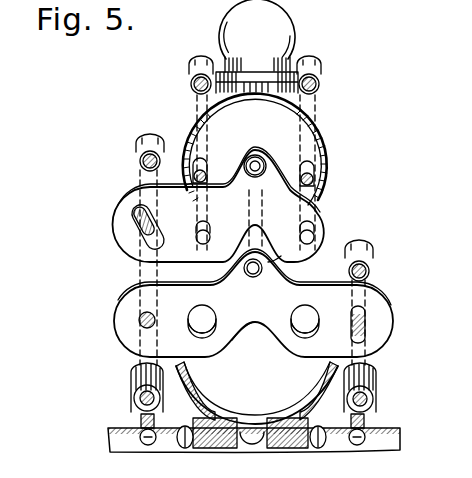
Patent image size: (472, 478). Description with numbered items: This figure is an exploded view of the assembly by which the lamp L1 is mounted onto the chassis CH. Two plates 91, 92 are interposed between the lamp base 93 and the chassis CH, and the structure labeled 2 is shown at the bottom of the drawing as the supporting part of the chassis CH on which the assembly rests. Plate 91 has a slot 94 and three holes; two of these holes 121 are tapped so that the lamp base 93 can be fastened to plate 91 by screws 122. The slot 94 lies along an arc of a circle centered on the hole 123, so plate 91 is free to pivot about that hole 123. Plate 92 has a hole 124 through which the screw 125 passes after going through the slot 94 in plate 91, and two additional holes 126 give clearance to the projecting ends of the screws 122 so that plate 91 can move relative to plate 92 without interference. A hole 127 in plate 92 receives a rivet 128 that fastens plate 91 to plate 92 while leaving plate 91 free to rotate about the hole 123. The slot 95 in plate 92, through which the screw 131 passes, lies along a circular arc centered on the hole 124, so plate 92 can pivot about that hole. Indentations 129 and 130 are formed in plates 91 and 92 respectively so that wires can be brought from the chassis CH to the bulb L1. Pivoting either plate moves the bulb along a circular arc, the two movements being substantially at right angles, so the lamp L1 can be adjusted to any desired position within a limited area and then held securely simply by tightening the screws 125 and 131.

The lamp L1 is at (292, 23).
The screws 122 is at (196, 58).
The lamp base 93 is at (322, 141).
The screw 125 is at (146, 139).
The plate 91 is at (323, 216).
The slot 94 is at (136, 213).
The tapped holes 121 is at (203, 229).
The rivet 128 is at (250, 171).
The hole 123 is at (261, 171).
The indentation 129 is at (281, 261).
The plate 92 is at (392, 306).
The hole 127 is at (250, 275).
The screw 131 is at (362, 251).
The hole 124 is at (153, 319).
The holes 126 is at (292, 313).
The slot 95 is at (366, 333).
The indentation 130 is at (240, 326).
The chassis CH is at (204, 413).
The base 2 is at (380, 432).